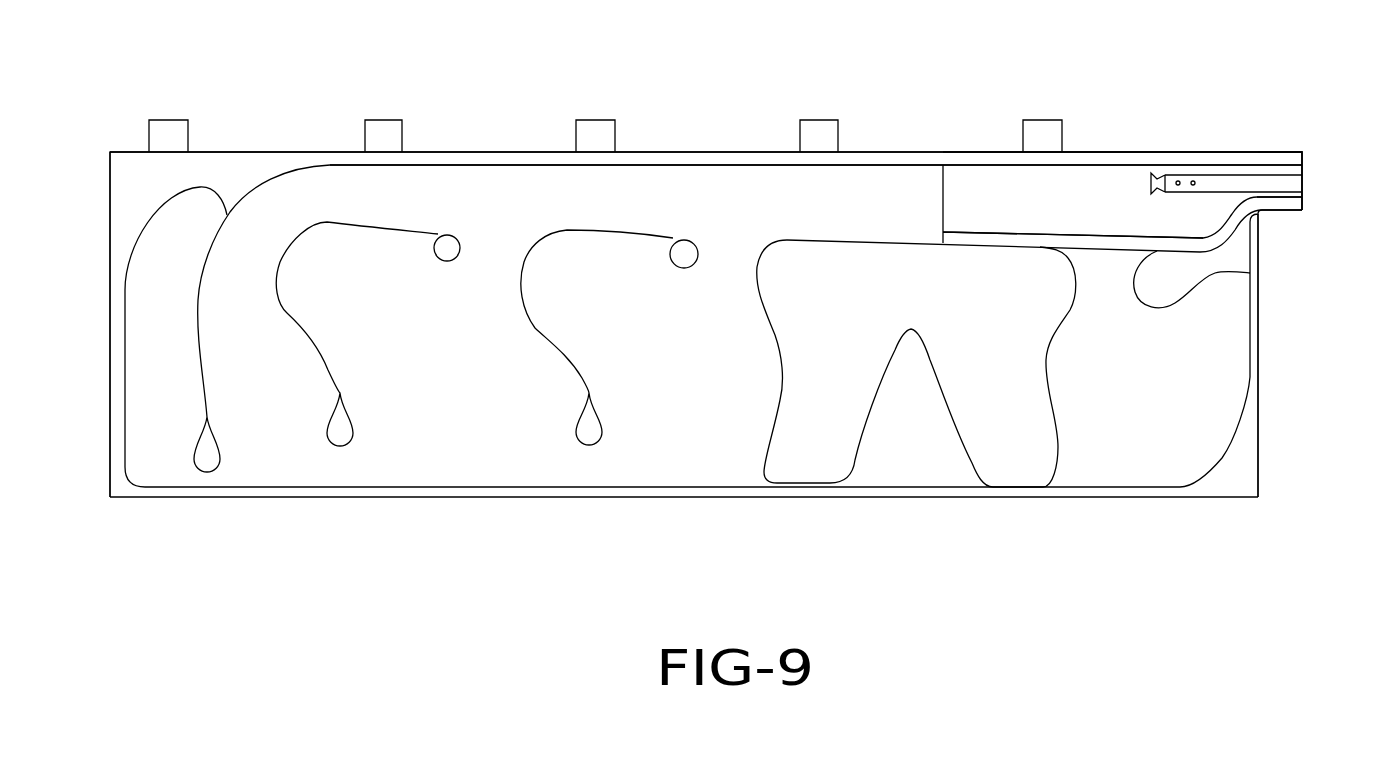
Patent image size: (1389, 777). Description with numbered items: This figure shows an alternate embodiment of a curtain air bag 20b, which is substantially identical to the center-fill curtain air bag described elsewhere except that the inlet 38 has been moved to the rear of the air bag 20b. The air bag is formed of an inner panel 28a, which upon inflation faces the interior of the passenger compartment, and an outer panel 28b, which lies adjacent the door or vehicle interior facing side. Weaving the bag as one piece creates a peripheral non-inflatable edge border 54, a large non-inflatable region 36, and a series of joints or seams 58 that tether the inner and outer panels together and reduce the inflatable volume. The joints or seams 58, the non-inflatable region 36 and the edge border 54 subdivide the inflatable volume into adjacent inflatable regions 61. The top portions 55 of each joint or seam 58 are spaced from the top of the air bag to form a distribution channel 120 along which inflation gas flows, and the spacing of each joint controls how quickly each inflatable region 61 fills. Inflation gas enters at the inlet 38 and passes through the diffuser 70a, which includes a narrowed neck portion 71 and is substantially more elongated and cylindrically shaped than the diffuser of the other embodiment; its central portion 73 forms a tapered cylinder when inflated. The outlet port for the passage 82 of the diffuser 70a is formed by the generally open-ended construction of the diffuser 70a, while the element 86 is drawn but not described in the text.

The air bag 20b is at (252, 146).
The top portions of joints or seams 55 is at (383, 133).
The edge border 54 is at (132, 177).
The inflatable regions 61 is at (155, 367).
The joints or seams 58 is at (320, 330).
The inner panel 28a is at (265, 407).
The outer panel 28b is at (418, 408).
The distribution channel 120 is at (663, 212).
The non-inflatable region 36 is at (847, 393).
The passage 82 is at (975, 197).
The central portion of diffuser 73 is at (1122, 150).
The pin 86 is at (1235, 185).
The inlet 38 is at (1273, 163).
The narrowed neck portion 71 is at (1287, 202).
The diffuser 70a is at (1246, 245).